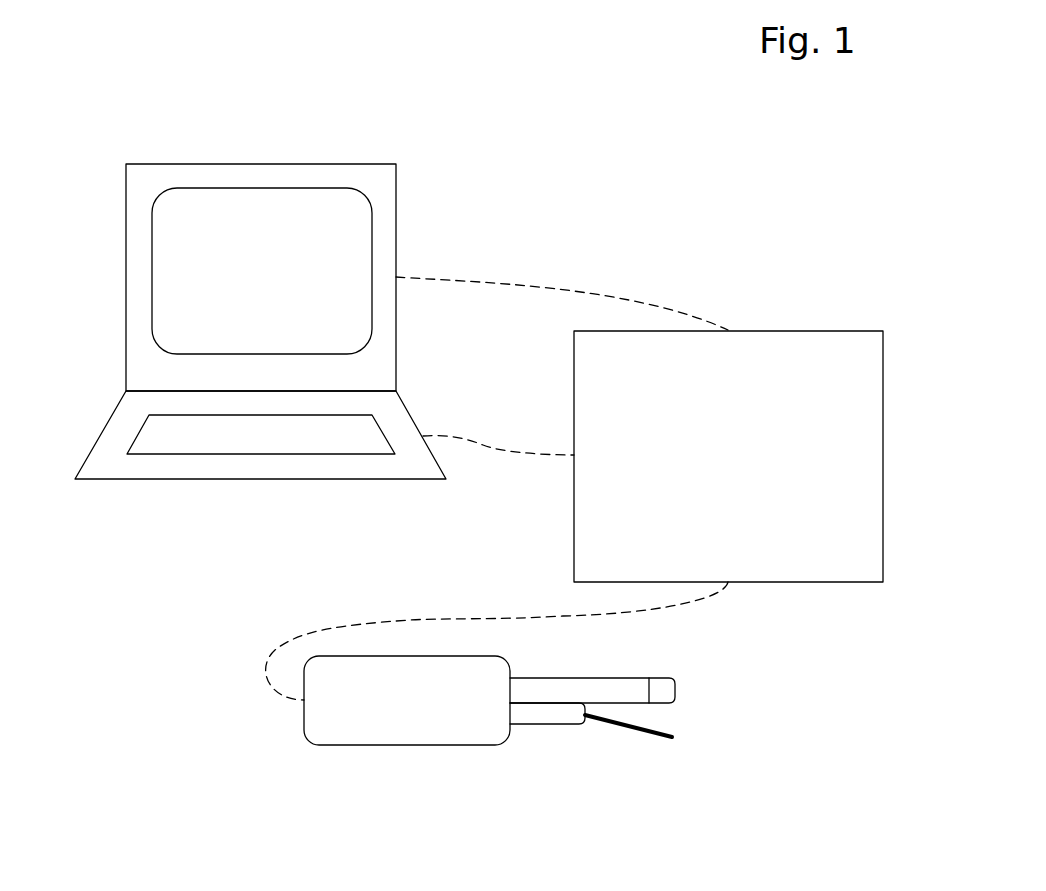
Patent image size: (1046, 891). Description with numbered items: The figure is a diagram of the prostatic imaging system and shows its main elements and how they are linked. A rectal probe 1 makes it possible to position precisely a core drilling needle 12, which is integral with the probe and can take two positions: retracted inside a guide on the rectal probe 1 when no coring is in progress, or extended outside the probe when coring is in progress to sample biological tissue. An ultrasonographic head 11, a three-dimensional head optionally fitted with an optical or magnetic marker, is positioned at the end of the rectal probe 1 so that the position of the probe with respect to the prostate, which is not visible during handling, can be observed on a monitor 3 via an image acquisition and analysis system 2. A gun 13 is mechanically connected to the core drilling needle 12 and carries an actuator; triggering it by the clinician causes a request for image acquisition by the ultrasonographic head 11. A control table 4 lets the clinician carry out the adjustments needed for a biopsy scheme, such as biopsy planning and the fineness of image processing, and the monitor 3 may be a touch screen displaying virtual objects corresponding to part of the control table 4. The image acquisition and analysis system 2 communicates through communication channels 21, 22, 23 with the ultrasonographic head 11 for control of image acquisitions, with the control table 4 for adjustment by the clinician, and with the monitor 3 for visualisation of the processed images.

The rectal probe 1 is at (378, 758).
The image acquisition and analysis system 2 is at (811, 390).
The monitor 3 is at (293, 215).
The control table 4 is at (190, 440).
The ultrasonographic head 11 is at (662, 690).
The core drilling needle 12 is at (635, 733).
The gun 13 is at (547, 713).
The communication channel 21 is at (408, 619).
The communication channel 22 is at (483, 450).
The communication channel 23 is at (537, 278).